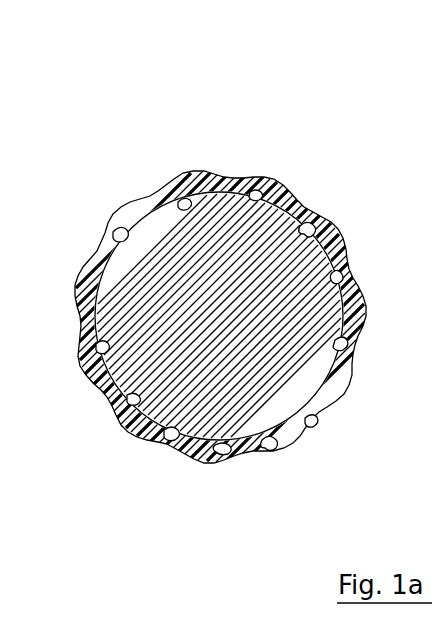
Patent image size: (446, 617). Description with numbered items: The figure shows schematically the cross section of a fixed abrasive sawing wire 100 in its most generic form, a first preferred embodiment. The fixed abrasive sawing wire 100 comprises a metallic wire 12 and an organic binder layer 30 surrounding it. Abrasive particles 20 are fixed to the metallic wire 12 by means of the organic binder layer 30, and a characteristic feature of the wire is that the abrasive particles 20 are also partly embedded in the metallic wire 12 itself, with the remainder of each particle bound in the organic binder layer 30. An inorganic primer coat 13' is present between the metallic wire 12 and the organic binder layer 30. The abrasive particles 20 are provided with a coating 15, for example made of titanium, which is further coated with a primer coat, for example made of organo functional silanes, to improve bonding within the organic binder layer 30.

The fixed abrasive sawing wire 100 is at (126, 79).
The metallic wire 12 is at (159, 398).
The inorganic primer coat 13' is at (200, 316).
The coating 15 is at (185, 185).
The abrasive particles 20 is at (312, 222).
The organic binder layer 30 is at (276, 433).